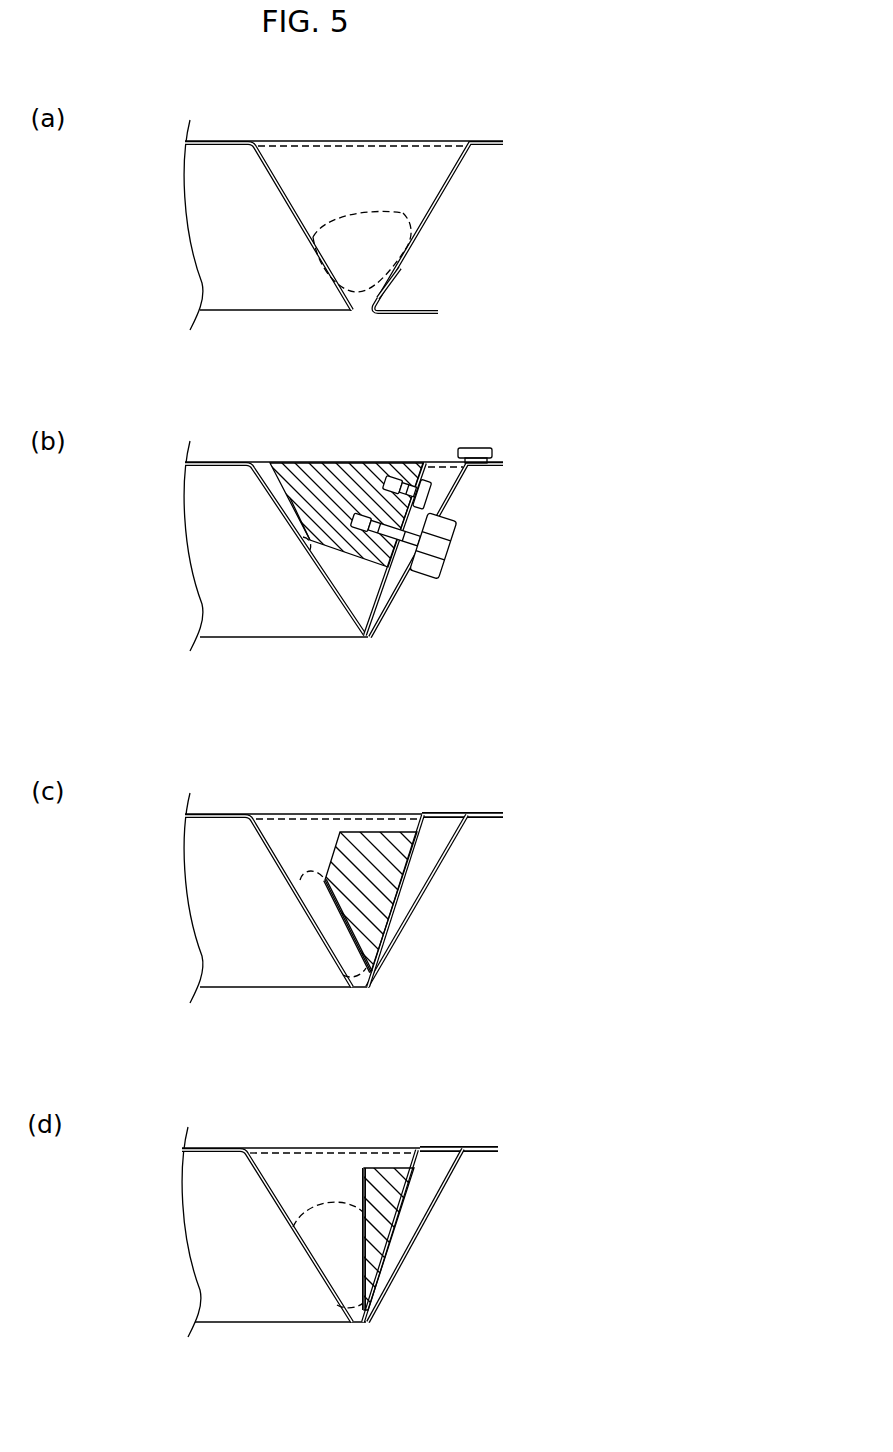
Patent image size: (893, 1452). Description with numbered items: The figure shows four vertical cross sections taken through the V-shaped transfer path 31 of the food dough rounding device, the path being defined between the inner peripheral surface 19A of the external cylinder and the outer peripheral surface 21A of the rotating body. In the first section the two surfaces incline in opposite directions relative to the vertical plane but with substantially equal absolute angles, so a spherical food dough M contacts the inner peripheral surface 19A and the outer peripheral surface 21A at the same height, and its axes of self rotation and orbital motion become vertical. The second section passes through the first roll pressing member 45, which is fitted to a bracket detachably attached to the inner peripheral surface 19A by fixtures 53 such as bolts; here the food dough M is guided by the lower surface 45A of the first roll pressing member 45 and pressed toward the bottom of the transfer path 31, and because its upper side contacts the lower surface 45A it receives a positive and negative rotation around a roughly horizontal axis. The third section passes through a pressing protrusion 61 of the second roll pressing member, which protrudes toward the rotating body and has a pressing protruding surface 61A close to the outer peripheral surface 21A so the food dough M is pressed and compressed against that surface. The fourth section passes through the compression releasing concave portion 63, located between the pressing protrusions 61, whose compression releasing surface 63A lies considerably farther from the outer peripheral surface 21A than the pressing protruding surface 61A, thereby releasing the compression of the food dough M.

The inner peripheral surface 19A is at (447, 177).
The outer peripheral surface 21A is at (283, 187).
The transfer path 31 is at (400, 188).
The food dough M is at (403, 213).
The first roll pressing member 45 is at (347, 487).
The lower surface 45A is at (352, 557).
The fixtures 53 is at (475, 448).
The pressing protrusion 61 is at (380, 850).
The pressing protruding surface 61A is at (343, 908).
The compression releasing concave portion 63 is at (383, 1185).
The compression releasing surface 63A is at (365, 1225).